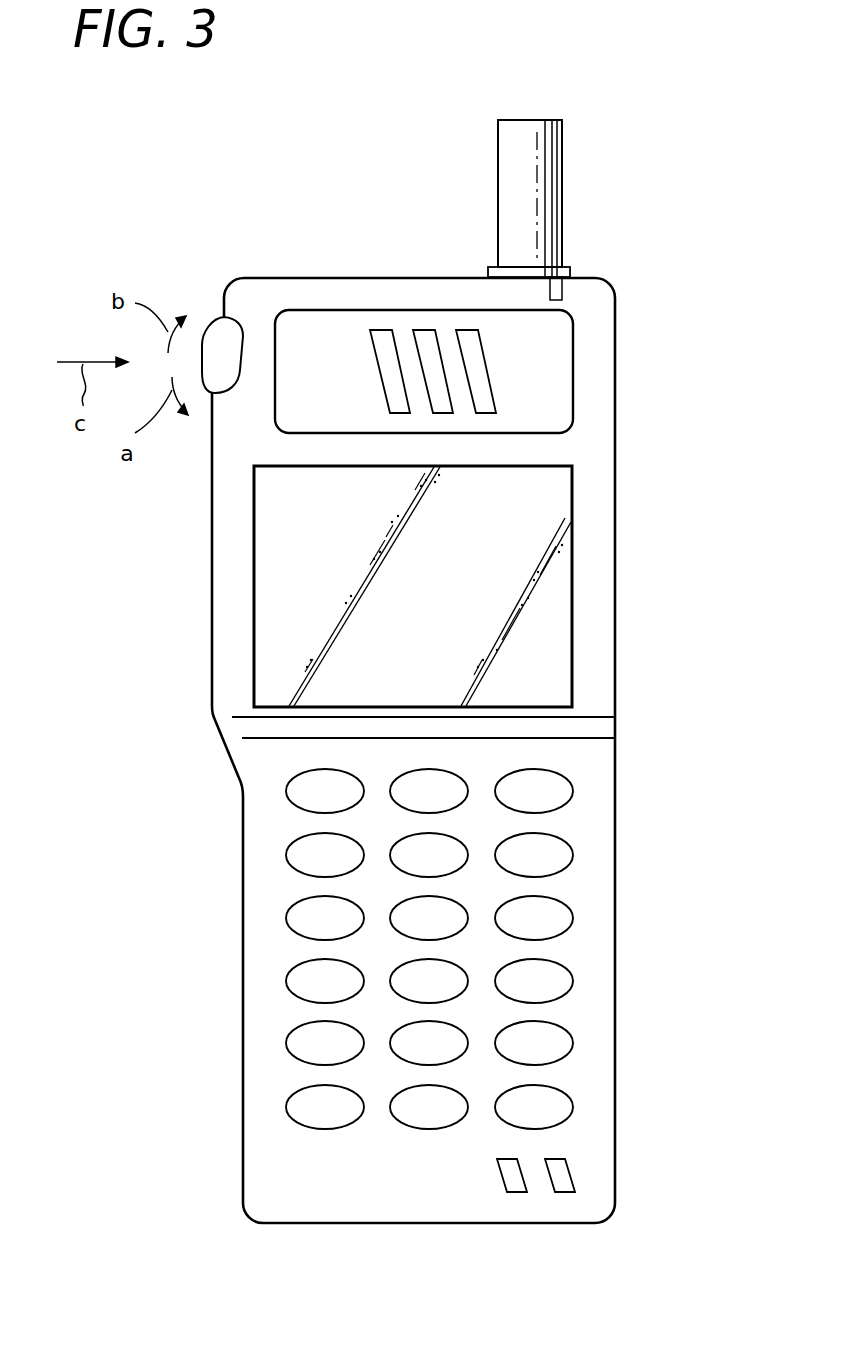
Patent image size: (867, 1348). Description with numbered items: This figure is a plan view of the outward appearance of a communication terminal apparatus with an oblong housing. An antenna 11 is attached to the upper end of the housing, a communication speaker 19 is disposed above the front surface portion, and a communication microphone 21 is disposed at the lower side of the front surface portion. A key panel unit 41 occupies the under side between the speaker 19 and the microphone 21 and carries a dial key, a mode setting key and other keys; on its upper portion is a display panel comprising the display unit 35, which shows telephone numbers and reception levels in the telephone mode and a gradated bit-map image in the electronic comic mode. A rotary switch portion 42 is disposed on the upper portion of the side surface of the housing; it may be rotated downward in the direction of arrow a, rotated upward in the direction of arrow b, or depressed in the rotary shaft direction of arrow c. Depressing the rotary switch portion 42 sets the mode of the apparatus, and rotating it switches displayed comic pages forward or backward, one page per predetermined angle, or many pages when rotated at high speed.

The antenna 11 is at (550, 172).
The rotary switch portion 42 is at (213, 350).
The communication speaker 19 is at (552, 362).
The display unit 35 is at (552, 572).
The key panel unit 41 is at (580, 887).
The communication microphone 21 is at (578, 1173).